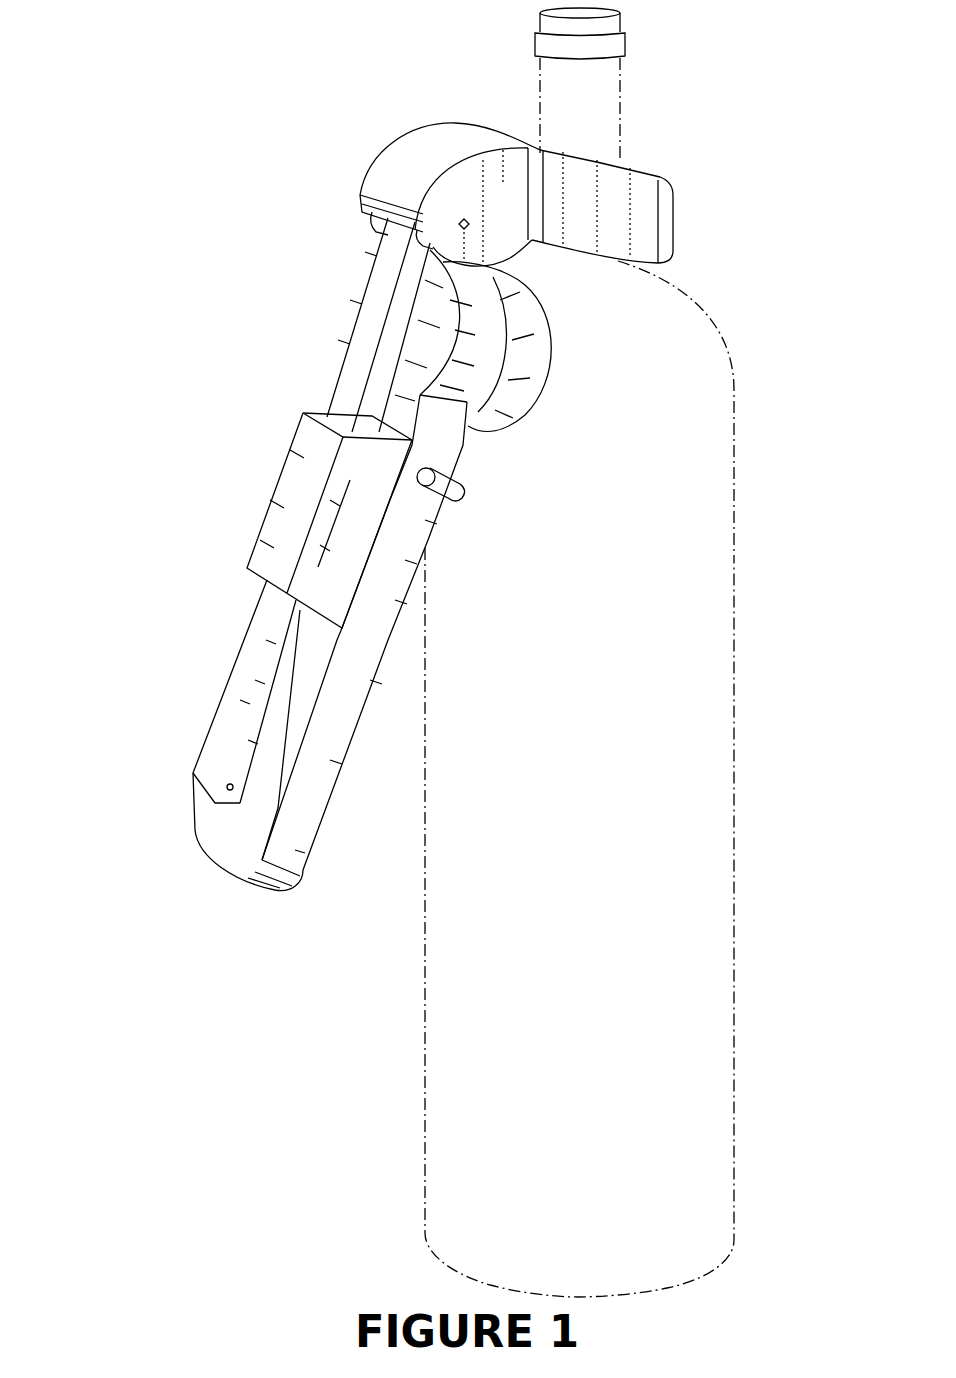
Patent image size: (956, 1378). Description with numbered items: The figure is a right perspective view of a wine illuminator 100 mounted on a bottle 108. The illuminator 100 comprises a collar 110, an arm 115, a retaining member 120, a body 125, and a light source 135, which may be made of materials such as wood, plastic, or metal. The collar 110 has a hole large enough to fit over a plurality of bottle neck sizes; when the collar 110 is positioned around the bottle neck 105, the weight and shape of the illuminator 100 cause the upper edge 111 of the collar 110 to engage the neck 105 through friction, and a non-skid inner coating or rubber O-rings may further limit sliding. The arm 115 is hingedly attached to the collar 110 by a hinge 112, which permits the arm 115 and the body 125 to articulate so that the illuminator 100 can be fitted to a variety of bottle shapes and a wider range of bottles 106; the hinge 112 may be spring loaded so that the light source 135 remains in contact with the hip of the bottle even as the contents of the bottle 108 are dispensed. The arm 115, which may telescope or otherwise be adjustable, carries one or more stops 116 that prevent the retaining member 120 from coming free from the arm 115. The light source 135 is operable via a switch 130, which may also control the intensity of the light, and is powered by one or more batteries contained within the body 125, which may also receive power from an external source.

The wine illuminator 100 is at (147, 128).
The bottle neck 105 is at (545, 102).
The bottle 106 is at (733, 342).
The bottle 108 is at (687, 862).
The collar 110 is at (383, 160).
The upper edge 111 is at (627, 160).
The hinge 112 is at (462, 216).
The arm 115 is at (367, 315).
The stop 116 is at (225, 778).
The retaining member 120 is at (285, 497).
The illuminator body 125 is at (217, 827).
The switch 130 is at (467, 500).
The light source 135 is at (548, 383).